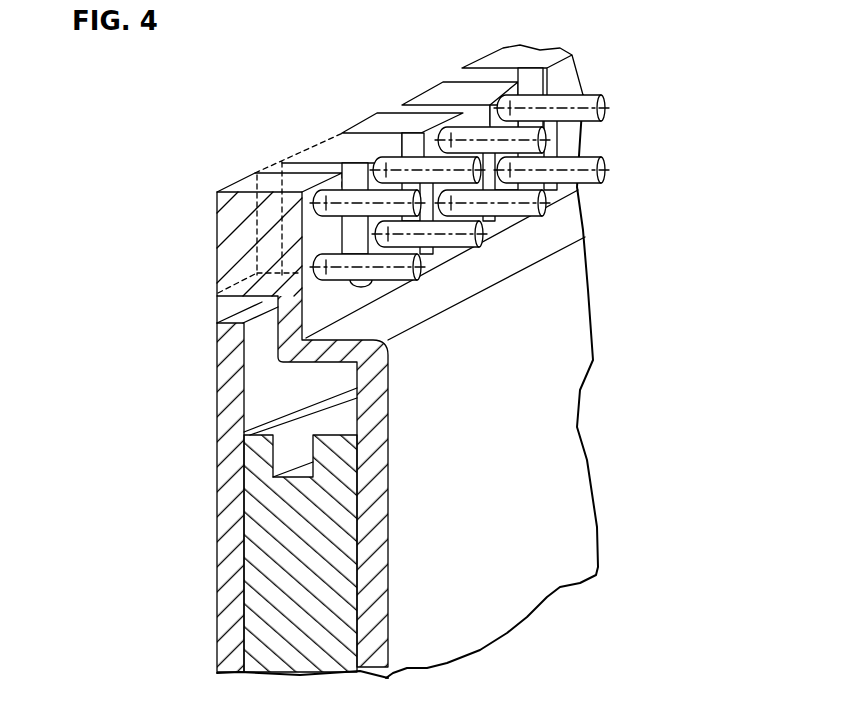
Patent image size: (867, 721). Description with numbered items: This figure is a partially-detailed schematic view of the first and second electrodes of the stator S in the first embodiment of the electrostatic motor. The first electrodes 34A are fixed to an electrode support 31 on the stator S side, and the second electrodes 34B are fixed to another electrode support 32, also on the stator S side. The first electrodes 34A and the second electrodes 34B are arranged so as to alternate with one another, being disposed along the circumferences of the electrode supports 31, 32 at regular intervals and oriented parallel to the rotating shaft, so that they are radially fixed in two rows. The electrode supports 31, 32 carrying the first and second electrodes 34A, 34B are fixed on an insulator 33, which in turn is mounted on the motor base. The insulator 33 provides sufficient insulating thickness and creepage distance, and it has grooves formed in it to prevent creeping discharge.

The electrode support 31 is at (338, 155).
The electrode support 32 is at (277, 185).
The insulator 33 is at (277, 474).
The first electrodes 34A is at (430, 227).
The second electrodes 34B is at (530, 190).
The stator S is at (462, 165).